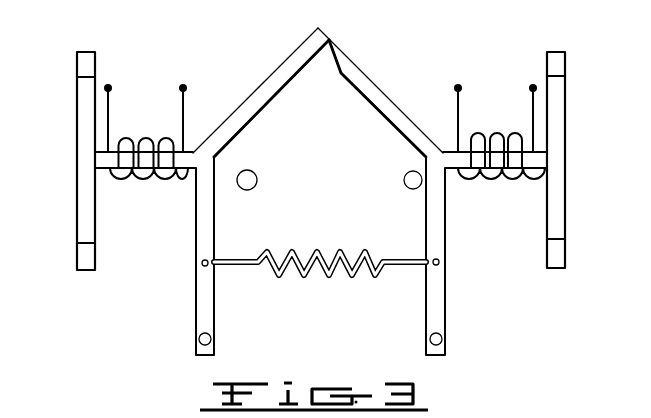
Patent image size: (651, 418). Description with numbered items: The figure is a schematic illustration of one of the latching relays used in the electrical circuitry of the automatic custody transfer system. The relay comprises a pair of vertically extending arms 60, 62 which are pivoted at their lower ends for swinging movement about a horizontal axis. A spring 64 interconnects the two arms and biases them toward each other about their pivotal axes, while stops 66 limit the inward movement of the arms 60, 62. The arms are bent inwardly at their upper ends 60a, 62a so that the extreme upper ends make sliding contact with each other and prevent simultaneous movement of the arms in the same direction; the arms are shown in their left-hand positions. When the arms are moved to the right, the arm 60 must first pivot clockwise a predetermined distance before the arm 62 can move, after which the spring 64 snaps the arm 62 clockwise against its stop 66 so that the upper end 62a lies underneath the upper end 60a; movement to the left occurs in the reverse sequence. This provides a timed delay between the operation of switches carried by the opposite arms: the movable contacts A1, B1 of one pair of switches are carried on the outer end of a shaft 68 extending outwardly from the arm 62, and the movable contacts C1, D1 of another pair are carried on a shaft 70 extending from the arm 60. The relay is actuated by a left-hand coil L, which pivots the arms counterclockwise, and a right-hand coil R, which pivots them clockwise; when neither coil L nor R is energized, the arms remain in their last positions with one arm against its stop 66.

The movable contact A1 is at (86, 62).
The movable contact B1 is at (86, 256).
The movable contact C1 is at (556, 67).
The movable contact D1 is at (556, 258).
The left-hand coil L is at (128, 191).
The right-hand coil R is at (487, 191).
The arm 60 is at (440, 232).
The upper end of arm 60 60a is at (354, 68).
The arm 62 is at (199, 218).
The upper end of arm 62 62a is at (297, 55).
The spring 64 is at (325, 255).
The stop 66 is at (251, 171).
The shaft 68 is at (193, 157).
The shaft 70 is at (462, 157).